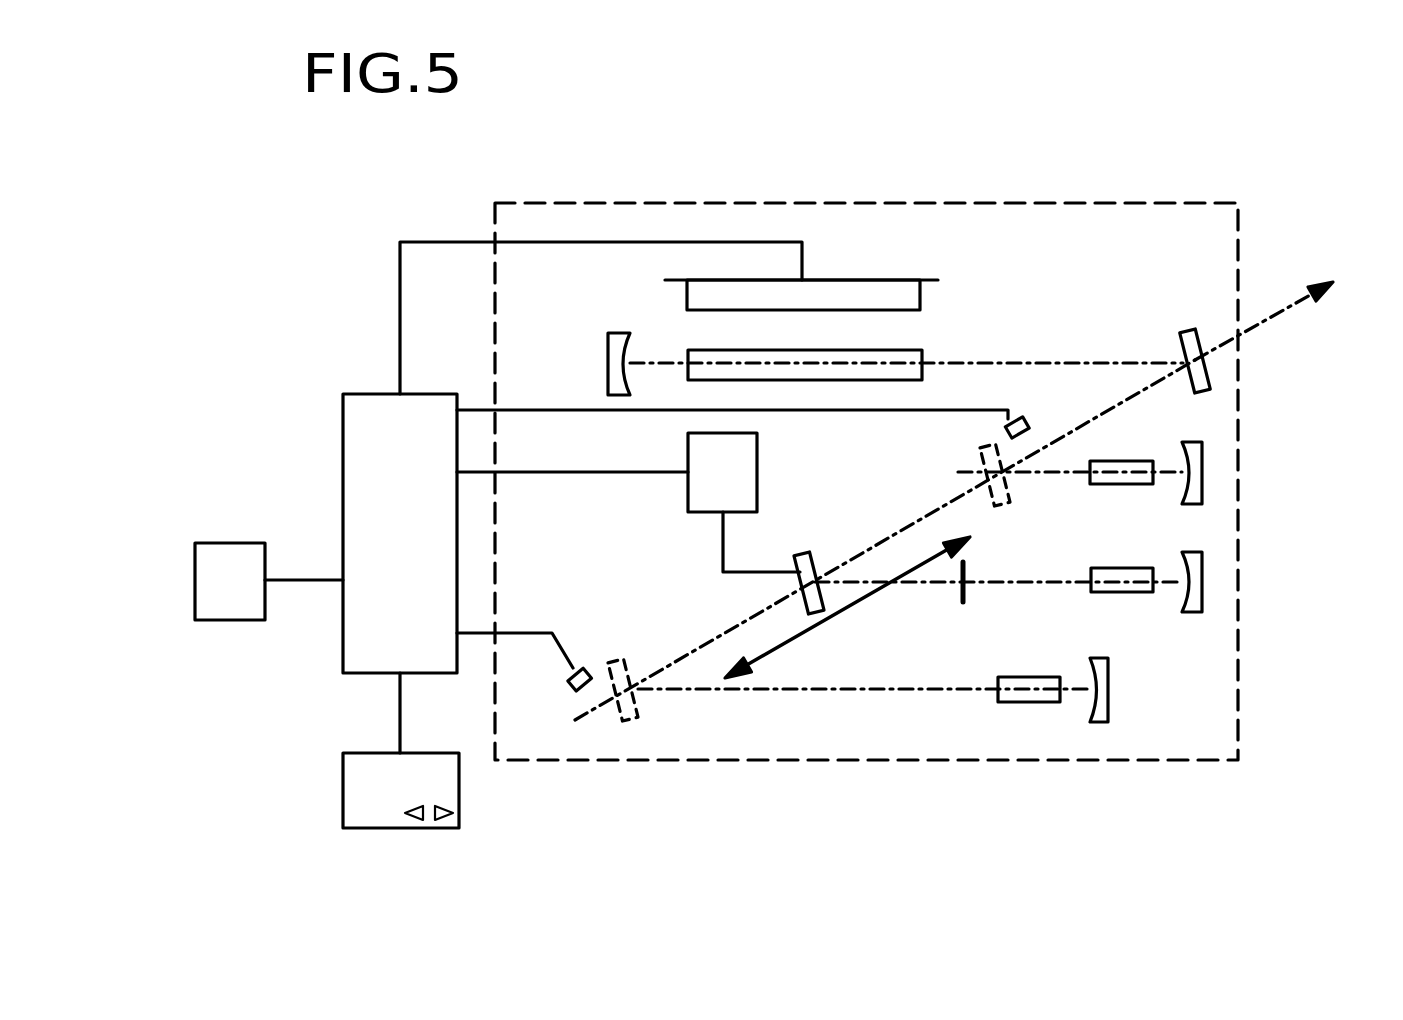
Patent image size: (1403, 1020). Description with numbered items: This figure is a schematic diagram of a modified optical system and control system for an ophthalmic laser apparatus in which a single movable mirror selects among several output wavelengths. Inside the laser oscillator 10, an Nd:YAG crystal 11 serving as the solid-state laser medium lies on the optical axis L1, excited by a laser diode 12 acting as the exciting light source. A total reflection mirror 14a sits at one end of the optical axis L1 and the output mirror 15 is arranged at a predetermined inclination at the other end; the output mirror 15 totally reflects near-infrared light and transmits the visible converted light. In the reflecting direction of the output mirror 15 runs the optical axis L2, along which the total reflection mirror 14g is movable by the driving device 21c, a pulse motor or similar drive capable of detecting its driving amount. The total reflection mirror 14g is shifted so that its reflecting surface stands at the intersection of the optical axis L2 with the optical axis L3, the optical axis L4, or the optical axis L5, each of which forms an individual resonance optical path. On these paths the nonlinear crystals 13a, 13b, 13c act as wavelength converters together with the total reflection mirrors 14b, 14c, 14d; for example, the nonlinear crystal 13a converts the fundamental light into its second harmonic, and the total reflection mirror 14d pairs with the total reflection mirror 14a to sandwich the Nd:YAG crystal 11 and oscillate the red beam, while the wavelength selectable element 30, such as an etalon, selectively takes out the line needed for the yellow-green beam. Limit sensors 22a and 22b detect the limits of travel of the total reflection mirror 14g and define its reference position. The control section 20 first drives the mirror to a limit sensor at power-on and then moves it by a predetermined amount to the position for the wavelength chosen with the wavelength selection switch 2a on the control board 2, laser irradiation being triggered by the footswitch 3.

The control board 2 is at (368, 758).
The wavelength selection switch 2a is at (442, 817).
The footswitch 3 is at (247, 543).
The laser oscillator 10 is at (1128, 203).
The Nd:YAG crystal 11 is at (902, 353).
The laser diode 12 is at (897, 287).
The nonlinear crystal 13a is at (1025, 703).
The nonlinear crystal 13b is at (1137, 485).
The nonlinear crystal 13c is at (1140, 597).
The total reflection mirror 14a is at (620, 337).
The total reflection mirror 14b is at (1198, 487).
The total reflection mirror 14c is at (1198, 602).
The total reflection mirror 14d is at (1110, 707).
The total reflection mirror 14g is at (803, 552).
The output mirror 15 is at (1197, 333).
The control section 20 is at (352, 440).
The driving device 21c is at (687, 497).
The limit sensor 22a is at (577, 695).
The limit sensor 22b is at (1020, 418).
The wavelength selectable element 30 is at (958, 592).
The optical axis L1 is at (1090, 363).
The optical axis L2 is at (1110, 410).
The optical axis L3 is at (1075, 472).
The optical axis L4 is at (1043, 582).
The optical axis L5 is at (830, 690).